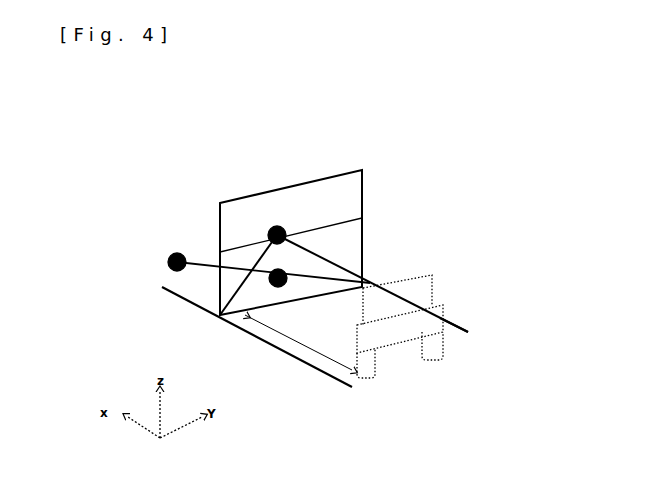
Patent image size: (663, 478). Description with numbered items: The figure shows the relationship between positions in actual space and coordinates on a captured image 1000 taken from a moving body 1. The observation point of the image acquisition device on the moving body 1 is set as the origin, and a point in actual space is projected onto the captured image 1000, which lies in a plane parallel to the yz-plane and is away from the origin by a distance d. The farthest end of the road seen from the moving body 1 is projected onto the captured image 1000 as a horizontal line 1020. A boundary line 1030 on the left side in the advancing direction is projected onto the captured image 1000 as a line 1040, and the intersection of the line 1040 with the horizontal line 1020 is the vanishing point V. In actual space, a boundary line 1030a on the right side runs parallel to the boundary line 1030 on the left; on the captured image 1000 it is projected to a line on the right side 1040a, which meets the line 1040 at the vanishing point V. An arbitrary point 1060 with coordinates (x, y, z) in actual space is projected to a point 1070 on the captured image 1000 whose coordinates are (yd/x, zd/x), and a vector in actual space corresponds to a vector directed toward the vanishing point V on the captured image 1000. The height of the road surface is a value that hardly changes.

The captured image 1000 is at (343, 168).
The horizontal line 1020 is at (303, 223).
The vanishing point V is at (280, 227).
The line 1040 is at (260, 257).
The line on the right side 1040a is at (317, 248).
The arbitrary point 1060 is at (167, 261).
The point 1070 is at (295, 271).
The boundary line 1030 is at (183, 303).
The boundary line on the right side 1030a is at (470, 323).
The distance d is at (298, 342).
The moving body 1 is at (412, 345).